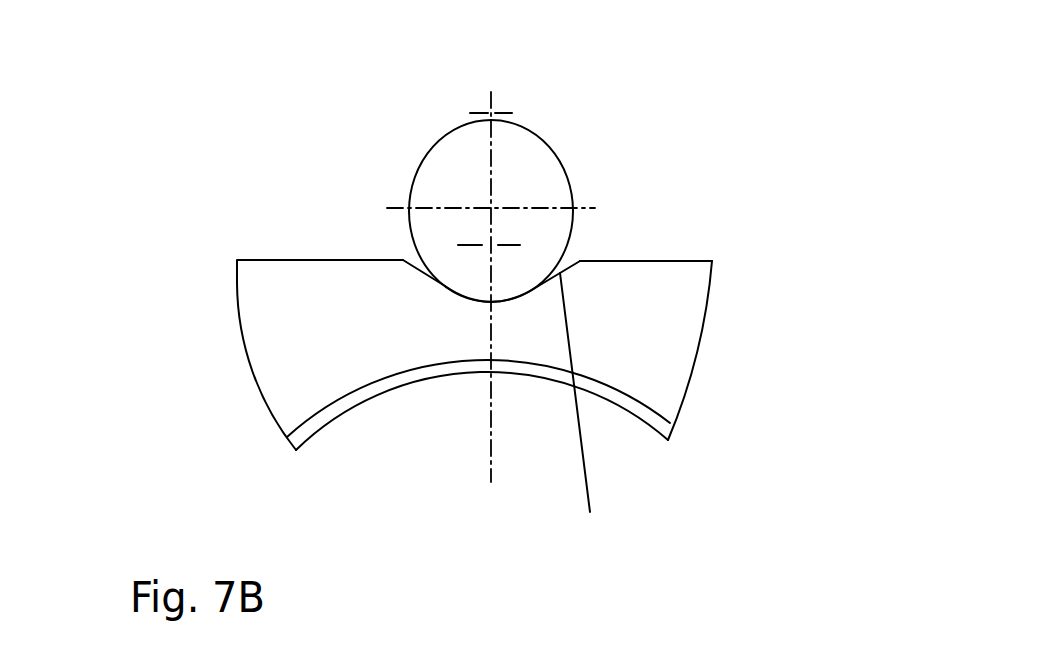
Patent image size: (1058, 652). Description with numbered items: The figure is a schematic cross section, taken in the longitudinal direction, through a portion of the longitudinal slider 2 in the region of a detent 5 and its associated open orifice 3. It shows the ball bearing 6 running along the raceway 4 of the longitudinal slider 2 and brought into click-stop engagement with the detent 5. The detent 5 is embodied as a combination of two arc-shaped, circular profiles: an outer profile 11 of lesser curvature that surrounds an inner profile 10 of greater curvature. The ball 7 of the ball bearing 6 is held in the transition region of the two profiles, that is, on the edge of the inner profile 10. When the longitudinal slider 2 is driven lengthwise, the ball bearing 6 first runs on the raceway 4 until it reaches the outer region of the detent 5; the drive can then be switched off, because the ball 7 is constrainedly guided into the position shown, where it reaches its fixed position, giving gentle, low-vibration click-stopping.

The longitudinal slider 2 is at (677, 337).
The open orifice 3 is at (352, 453).
The raceway 4 is at (647, 258).
The detent 5 is at (462, 293).
The ball bearing 6 is at (547, 145).
The ball 7 is at (458, 163).
The inner profile 10 is at (475, 300).
The outer profile 11 is at (586, 418).